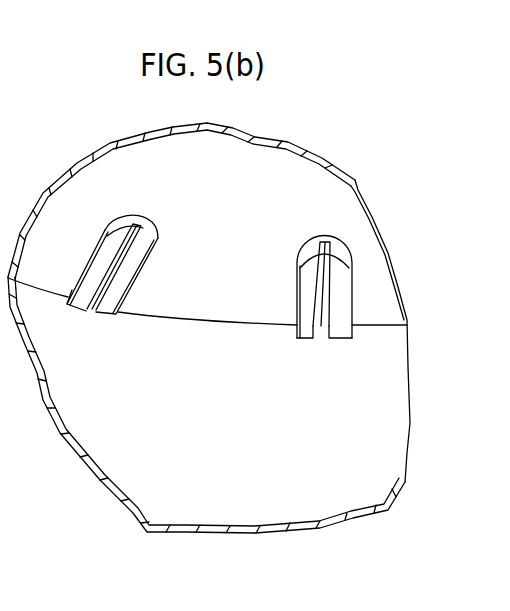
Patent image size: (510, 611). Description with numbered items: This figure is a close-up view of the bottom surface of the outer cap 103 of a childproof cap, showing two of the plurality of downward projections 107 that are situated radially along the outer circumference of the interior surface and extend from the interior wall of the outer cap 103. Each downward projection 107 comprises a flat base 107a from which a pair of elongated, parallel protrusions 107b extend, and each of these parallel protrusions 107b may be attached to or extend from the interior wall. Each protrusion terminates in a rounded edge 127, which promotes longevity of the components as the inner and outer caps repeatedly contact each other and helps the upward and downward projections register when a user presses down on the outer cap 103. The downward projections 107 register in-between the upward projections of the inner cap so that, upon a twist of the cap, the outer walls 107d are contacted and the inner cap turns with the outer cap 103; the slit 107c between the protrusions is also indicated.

The outer cap 103 is at (147, 532).
The downward projections 107 is at (203, 292).
The flat base 107a is at (133, 219).
The parallel protrusions 107b is at (105, 267).
The slit of right engaging tab 107c is at (325, 252).
The outer walls 107d is at (70, 287).
The rounded edge 127 is at (125, 225).